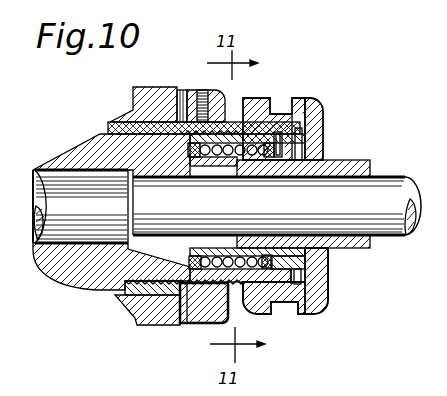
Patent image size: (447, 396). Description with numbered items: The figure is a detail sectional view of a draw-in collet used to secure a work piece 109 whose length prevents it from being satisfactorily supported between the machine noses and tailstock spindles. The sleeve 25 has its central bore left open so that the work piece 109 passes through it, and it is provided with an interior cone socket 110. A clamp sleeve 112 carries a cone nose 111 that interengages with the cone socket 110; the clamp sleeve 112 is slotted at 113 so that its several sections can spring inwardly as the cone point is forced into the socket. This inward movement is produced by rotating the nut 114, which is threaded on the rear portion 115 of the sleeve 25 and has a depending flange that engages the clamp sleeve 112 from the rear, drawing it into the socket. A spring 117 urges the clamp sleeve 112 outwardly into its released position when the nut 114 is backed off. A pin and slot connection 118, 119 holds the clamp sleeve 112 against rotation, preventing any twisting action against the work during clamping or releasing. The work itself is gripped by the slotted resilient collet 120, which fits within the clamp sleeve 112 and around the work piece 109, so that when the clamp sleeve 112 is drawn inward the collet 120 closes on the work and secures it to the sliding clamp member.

The work piece 109 is at (378, 190).
The interior cone socket 110 is at (333, 143).
The cone nose 111 is at (187, 157).
The clamp sleeve 112 is at (328, 268).
The slot 113 is at (147, 240).
The nut 114 is at (326, 116).
The rear portion 115 is at (232, 128).
The spring 117 is at (276, 130).
The pin 118 is at (325, 138).
The slot 119 is at (323, 110).
The slotted resilient collet 120 is at (368, 160).
The sleeve 25 is at (88, 267).